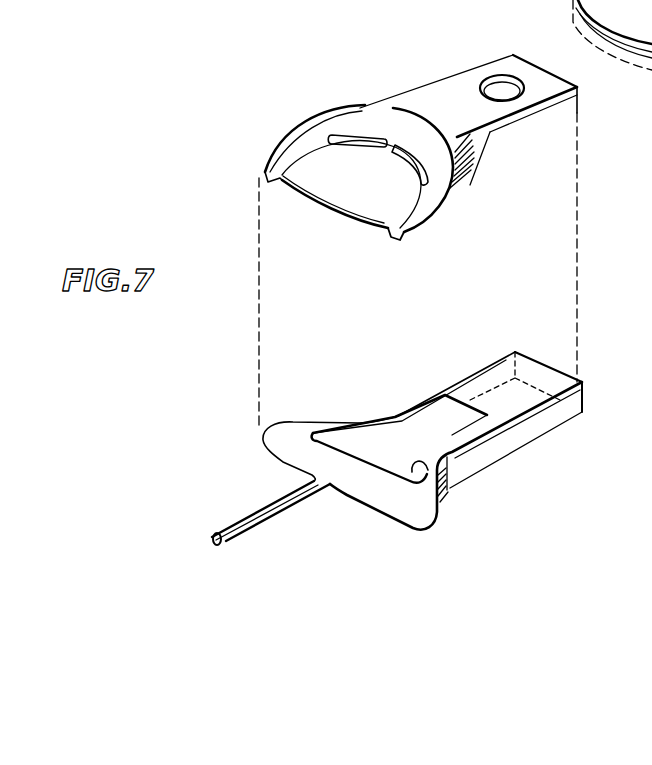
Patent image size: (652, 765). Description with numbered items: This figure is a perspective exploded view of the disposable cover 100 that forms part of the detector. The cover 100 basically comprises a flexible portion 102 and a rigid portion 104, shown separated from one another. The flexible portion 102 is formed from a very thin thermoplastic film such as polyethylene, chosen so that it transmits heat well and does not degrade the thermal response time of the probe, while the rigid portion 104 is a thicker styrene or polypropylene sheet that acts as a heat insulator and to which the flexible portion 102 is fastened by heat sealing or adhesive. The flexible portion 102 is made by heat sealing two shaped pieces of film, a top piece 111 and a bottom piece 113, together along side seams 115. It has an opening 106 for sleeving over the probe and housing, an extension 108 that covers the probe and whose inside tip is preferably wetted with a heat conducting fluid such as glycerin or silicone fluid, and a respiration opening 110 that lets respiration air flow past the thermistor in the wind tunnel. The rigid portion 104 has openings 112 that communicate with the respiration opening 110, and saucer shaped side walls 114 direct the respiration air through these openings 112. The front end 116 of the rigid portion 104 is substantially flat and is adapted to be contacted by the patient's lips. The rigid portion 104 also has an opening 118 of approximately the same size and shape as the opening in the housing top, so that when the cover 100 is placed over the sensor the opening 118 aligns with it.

The disposable cover 100 is at (577, 222).
The flexible portion 102 is at (562, 429).
The rigid portion 104 is at (440, 77).
The opening 106 is at (540, 372).
The extension 108 is at (238, 540).
The respiration opening 110 is at (444, 477).
The top piece 111 is at (526, 409).
The openings 112 is at (405, 150).
The bottom piece 113 is at (402, 459).
The saucer shaped side walls 114 is at (300, 147).
The side seams 115 is at (483, 392).
The front end 116 is at (337, 183).
The opening 118 is at (498, 77).